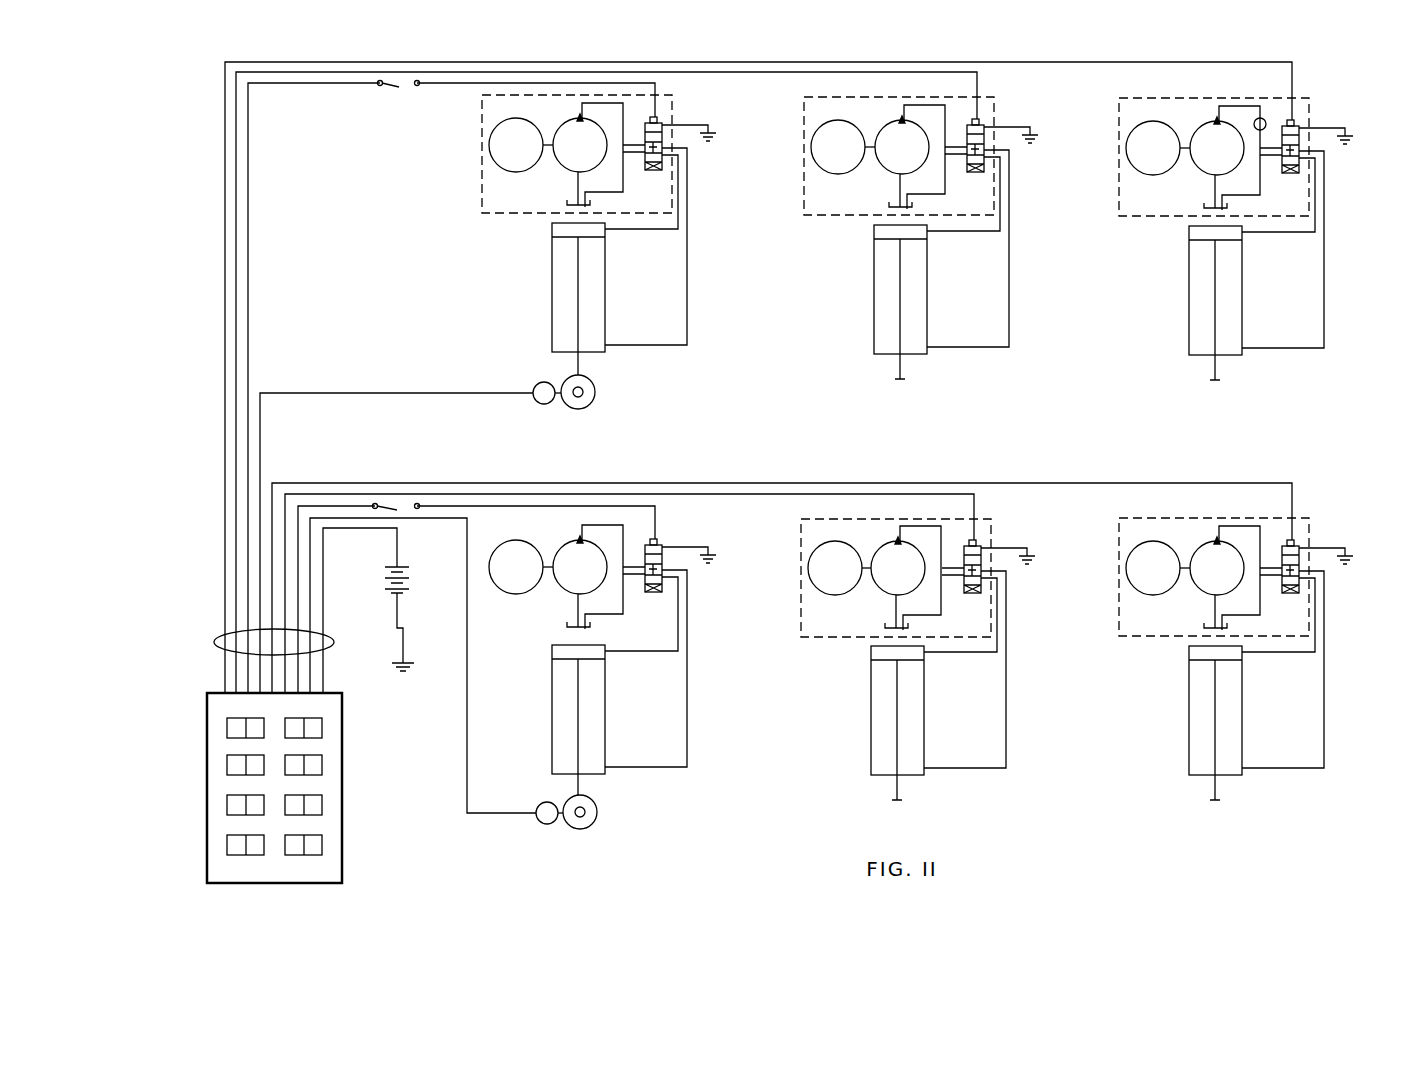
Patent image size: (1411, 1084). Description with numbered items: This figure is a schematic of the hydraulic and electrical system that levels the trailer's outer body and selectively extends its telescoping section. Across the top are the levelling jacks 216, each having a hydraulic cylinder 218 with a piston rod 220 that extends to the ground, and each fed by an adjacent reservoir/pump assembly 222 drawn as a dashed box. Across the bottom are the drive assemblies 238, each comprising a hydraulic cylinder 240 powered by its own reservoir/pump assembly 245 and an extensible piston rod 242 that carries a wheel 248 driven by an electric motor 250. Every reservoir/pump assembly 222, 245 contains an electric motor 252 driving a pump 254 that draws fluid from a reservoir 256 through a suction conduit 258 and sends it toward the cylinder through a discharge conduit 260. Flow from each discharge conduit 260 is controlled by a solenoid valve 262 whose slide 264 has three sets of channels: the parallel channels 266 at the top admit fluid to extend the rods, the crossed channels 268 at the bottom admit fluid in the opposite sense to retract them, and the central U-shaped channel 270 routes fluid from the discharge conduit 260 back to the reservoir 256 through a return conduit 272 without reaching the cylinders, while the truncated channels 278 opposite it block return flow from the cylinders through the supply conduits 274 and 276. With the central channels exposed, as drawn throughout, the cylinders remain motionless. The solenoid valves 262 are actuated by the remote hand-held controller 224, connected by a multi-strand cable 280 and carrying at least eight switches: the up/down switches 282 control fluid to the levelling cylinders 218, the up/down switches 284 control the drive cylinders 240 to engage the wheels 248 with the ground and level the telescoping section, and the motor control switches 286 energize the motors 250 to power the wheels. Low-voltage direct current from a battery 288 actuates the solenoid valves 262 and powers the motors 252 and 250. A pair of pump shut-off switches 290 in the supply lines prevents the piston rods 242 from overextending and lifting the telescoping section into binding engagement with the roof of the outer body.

The jack 216 is at (853, 276).
The hydraulic cylinder 218 is at (928, 301).
The piston rod 220 is at (906, 376).
The reservoir/pump assembly 222 is at (804, 112).
The hand-held controller 224 is at (188, 712).
The drive assembly 238 is at (535, 267).
The hydraulic cylinder 240 is at (606, 301).
The piston rod 242 is at (580, 363).
The reservoir/pump assembly 245 is at (482, 136).
The wheel 248 is at (589, 406).
The electric motor 250 is at (534, 387).
The electric motor 252 is at (493, 161).
The pump 254 is at (561, 126).
The reservoir 256 is at (589, 206).
The suction conduit 258 is at (572, 192).
The discharge conduit 260 is at (597, 103).
The solenoid valve 262 is at (645, 108).
The slide 264 is at (664, 128).
The parallel channels 266 is at (664, 133).
The crossed channels 268 is at (665, 166).
The U-shaped channel 270 is at (665, 156).
The return conduit 272 is at (624, 162).
The supply conduit 274 is at (646, 233).
The supply conduit 276 is at (639, 345).
The truncated channels 278 is at (665, 148).
The multi-strand cable 280 is at (327, 648).
The up/down switches 282 is at (227, 765).
The up/down switches 284 is at (227, 806).
The motor control switches 286 is at (227, 847).
The battery 288 is at (420, 578).
The pump shut-off switches 290 is at (398, 87).